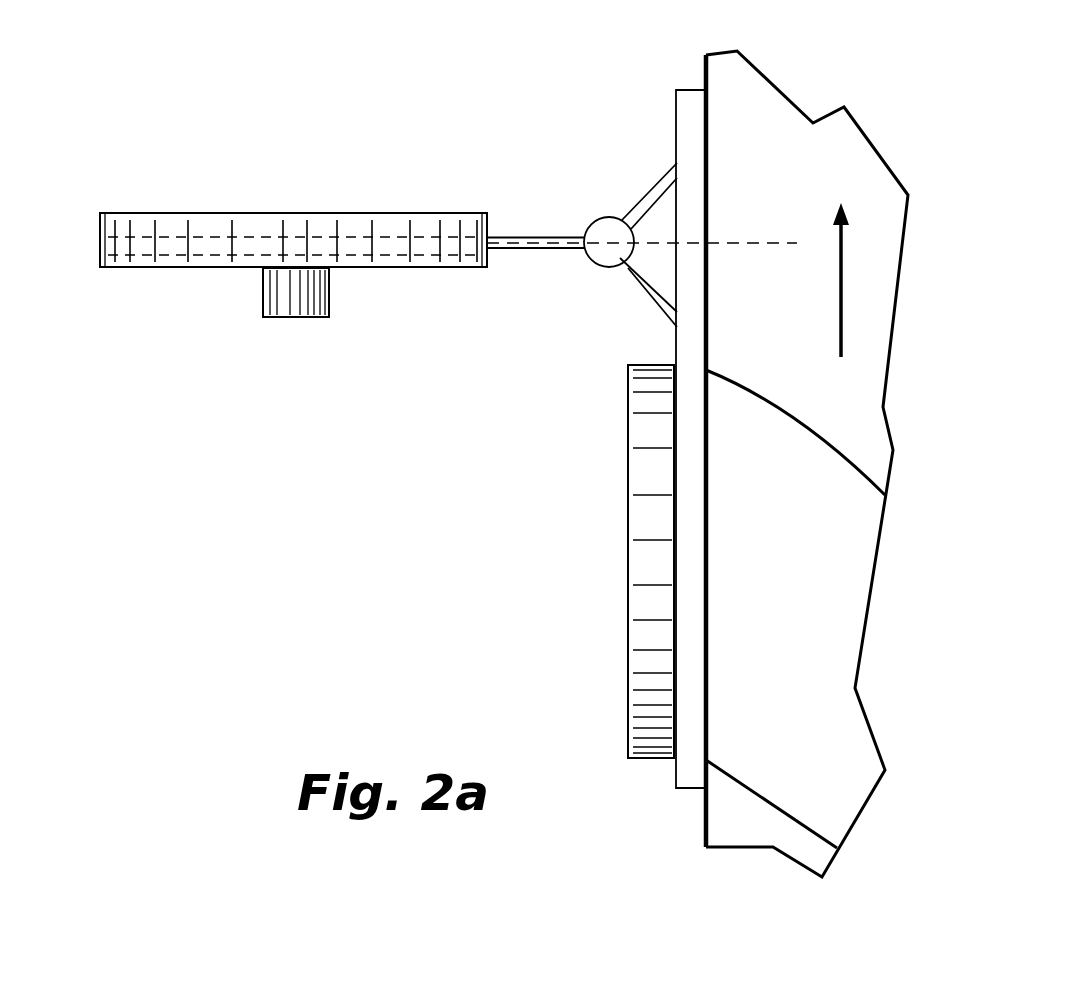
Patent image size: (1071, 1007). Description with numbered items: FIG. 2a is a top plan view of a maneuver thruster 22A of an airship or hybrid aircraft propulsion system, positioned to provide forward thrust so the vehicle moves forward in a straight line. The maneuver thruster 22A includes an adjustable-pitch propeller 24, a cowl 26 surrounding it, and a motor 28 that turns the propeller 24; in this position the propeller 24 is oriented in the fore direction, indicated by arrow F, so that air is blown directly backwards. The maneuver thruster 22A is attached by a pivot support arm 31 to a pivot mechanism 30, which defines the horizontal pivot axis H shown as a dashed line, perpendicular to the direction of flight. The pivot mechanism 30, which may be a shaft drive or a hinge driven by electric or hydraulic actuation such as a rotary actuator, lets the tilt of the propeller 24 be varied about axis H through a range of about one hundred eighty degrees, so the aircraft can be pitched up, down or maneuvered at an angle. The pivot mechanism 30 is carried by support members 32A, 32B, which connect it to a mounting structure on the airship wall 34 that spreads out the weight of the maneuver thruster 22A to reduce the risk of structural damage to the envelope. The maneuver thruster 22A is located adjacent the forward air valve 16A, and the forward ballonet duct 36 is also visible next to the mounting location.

The maneuver thruster 22A is at (115, 200).
The cowl 26 is at (97, 262).
The propeller 24 is at (220, 257).
The motor 28 is at (283, 312).
The pivot mechanism 30 is at (588, 220).
The pivot support arm 31 is at (560, 250).
The support member 32A is at (648, 198).
The support member 32B is at (655, 316).
The airship wall 34 is at (704, 73).
The forward air valve 16A is at (626, 610).
The forward ballonet duct 36 is at (803, 626).